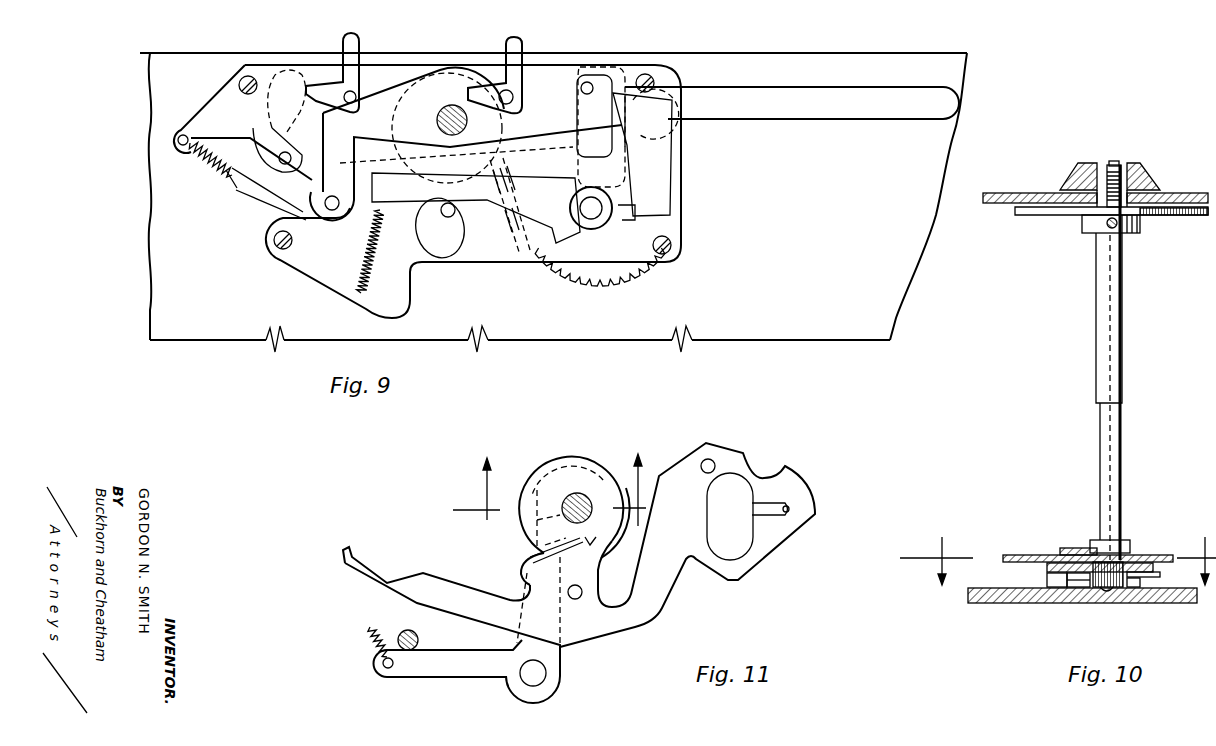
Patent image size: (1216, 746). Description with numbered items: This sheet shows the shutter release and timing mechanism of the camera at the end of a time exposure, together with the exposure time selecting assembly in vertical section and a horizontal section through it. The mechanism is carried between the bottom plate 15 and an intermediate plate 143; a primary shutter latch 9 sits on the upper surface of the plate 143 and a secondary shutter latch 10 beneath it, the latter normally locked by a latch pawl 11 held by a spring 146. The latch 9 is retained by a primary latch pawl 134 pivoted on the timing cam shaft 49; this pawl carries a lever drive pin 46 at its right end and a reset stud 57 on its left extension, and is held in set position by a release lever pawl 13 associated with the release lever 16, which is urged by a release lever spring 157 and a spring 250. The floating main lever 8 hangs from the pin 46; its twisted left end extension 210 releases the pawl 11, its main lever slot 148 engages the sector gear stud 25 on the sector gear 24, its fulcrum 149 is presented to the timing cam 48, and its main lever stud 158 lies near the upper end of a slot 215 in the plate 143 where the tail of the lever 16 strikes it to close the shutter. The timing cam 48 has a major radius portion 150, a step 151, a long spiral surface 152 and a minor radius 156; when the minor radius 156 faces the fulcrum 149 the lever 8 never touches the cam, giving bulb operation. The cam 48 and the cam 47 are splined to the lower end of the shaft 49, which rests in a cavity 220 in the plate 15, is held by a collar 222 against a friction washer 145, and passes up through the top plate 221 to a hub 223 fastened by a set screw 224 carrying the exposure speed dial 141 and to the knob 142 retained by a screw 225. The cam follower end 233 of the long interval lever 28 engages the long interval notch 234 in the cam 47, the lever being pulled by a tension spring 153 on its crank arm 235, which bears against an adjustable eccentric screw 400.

In FIG. 9, the main lever 8 is at (505, 250).
In FIG. 11, the main lever 8 is at (668, 620).
In FIG. 9, the primary shutter latch 9 is at (518, 47).
In FIG. 9, the secondary shutter latch 10 is at (354, 47).
In FIG. 11, the secondary shutter latch 10 is at (549, 482).
In FIG. 9, the latch pawl 11 is at (281, 126).
In FIG. 10, the latch pawl 11 is at (1058, 561).
In FIG. 9, the release lever pawl 13 is at (672, 178).
In FIG. 9, the bottom plate 15 is at (897, 303).
In FIG. 10, the bottom plate 15 is at (1194, 603).
In FIG. 9, the release lever 16 is at (742, 120).
In FIG. 9, the sector gear 24 is at (624, 282).
In FIG. 9, the sector gear stud 25 is at (672, 160).
In FIG. 11, the long interval lever 28 is at (560, 665).
In FIG. 10, the long interval lever 28 is at (1057, 600).
In FIG. 11, the lever drive pin 46 is at (703, 471).
In FIG. 11, the cam 47 is at (614, 545).
In FIG. 10, the cam 47 is at (1162, 574).
In FIG. 9, the timing cam 48 is at (441, 62).
In FIG. 11, the timing cam 48 is at (547, 467).
In FIG. 10, the timing cam 48 is at (1047, 555).
In FIG. 9, the timing cam shaft 49 is at (438, 122).
In FIG. 11, the timing cam shaft 49 is at (592, 503).
In FIG. 10, the timing cam shaft 49 is at (1121, 490).
In FIG. 9, the primary latch pawl reset stud 57 is at (334, 212).
In FIG. 9, the primary latch pawl 134 is at (386, 95).
In FIG. 10, the primary latch pawl 134 is at (1137, 550).
In FIG. 10, the exposure speed dial 141 is at (1147, 213).
In FIG. 10, the knob 142 is at (1153, 182).
In FIG. 10, the intermediate plate 143 is at (1167, 553).
In FIG. 10, the friction washer 145 is at (1087, 550).
In FIG. 9, the spring 146 is at (194, 158).
In FIG. 11, the main lever slot 148 is at (790, 508).
In FIG. 11, the fulcrum 149 is at (583, 547).
In FIG. 11, the major radius portion 150 is at (530, 558).
In FIG. 11, the step 151 is at (521, 549).
In FIG. 11, the spiral surface 152 is at (560, 453).
In FIG. 11, the tension spring 153 is at (370, 643).
In FIG. 11, the minor radius 156 is at (600, 531).
In FIG. 9, the release lever spring 157 is at (359, 271).
In FIG. 9, the main lever stud 158 is at (447, 217).
In FIG. 11, the main lever stud 158 is at (583, 598).
In FIG. 9, the left end extension 210 is at (207, 158).
In FIG. 11, the left end extension 210 is at (363, 583).
In FIG. 9, the slot 215 is at (456, 240).
In FIG. 10, the cavity 220 is at (1107, 594).
In FIG. 10, the top plate 221 is at (1196, 190).
In FIG. 10, the collar 222 is at (1140, 582).
In FIG. 10, the hub 223 is at (1142, 230).
In FIG. 10, the set screw 224 is at (1107, 227).
In FIG. 10, the screw 225 is at (1120, 162).
In FIG. 11, the cam follower end 233 is at (522, 497).
In FIG. 10, the cam follower end 233 is at (1050, 581).
In FIG. 11, the long interval notch 234 is at (569, 479).
In FIG. 10, the long interval notch 234 is at (1050, 576).
In FIG. 11, the crank arm 235 is at (483, 674).
In FIG. 9, the spring 250 is at (572, 207).
In FIG. 11, the eccentric screw 400 is at (419, 640).